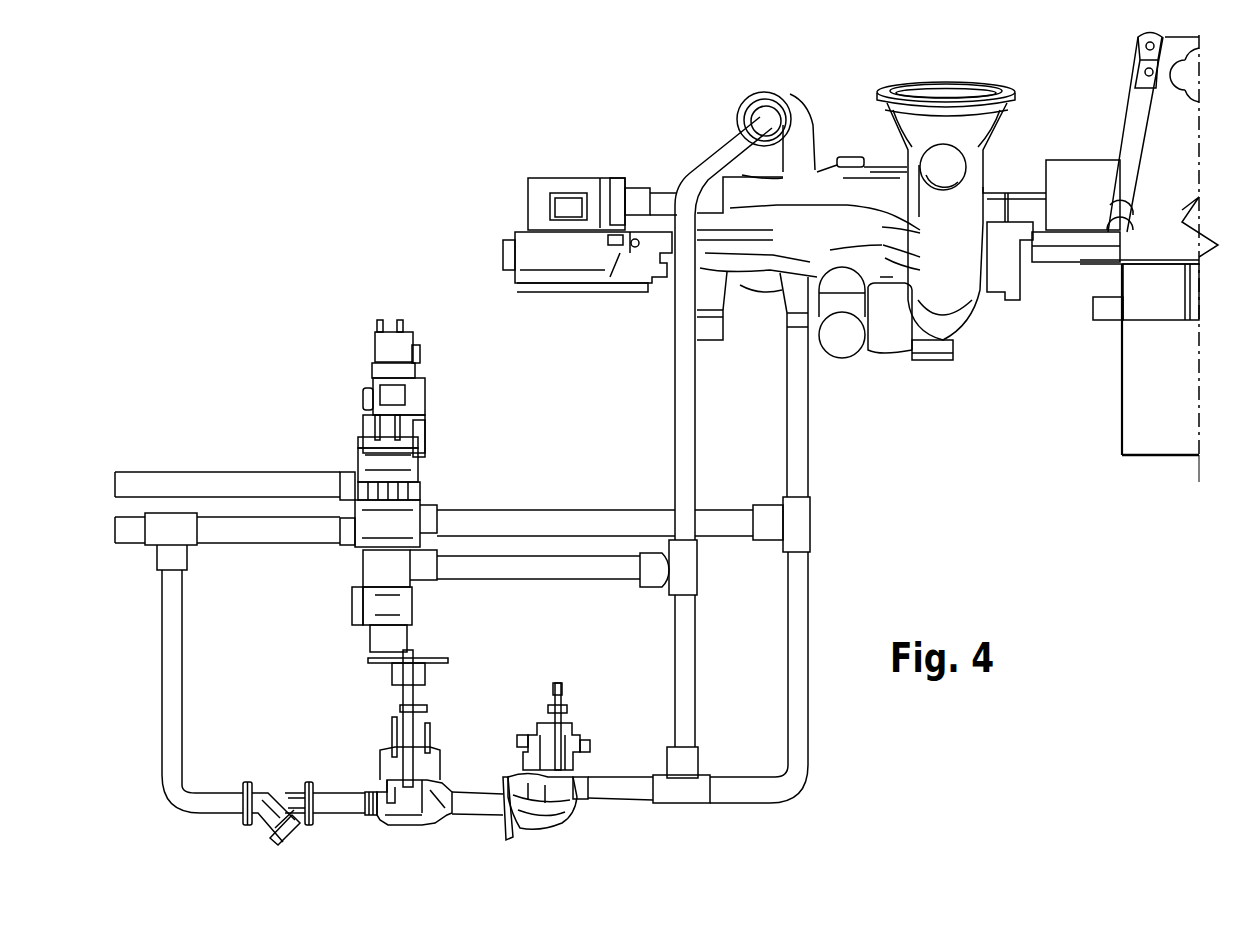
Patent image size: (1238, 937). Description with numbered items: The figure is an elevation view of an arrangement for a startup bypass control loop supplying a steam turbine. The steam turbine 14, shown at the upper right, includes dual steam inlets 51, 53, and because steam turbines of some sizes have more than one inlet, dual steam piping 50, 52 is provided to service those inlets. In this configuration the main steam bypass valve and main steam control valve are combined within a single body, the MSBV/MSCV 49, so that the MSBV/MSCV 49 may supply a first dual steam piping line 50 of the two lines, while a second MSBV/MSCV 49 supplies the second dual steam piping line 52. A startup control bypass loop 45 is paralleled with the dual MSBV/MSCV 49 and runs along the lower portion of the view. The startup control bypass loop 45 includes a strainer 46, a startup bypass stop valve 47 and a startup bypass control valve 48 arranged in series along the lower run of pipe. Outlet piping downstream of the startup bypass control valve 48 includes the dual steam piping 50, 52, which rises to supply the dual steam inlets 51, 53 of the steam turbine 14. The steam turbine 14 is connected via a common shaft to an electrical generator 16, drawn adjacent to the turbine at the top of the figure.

The steam turbine 14 is at (836, 141).
The electrical generator 16 is at (566, 177).
The startup control bypass loop 45 is at (162, 813).
The strainer 46 is at (278, 790).
The startup bypass stop valve 47 is at (440, 790).
The startup bypass control valve 48 is at (578, 745).
The MSBV/MSCV 49 is at (400, 535).
The first dual steam piping line 50 is at (675, 455).
The steam inlet 51 is at (791, 96).
The second dual steam piping line 52 is at (788, 370).
The steam inlet 53 is at (797, 290).